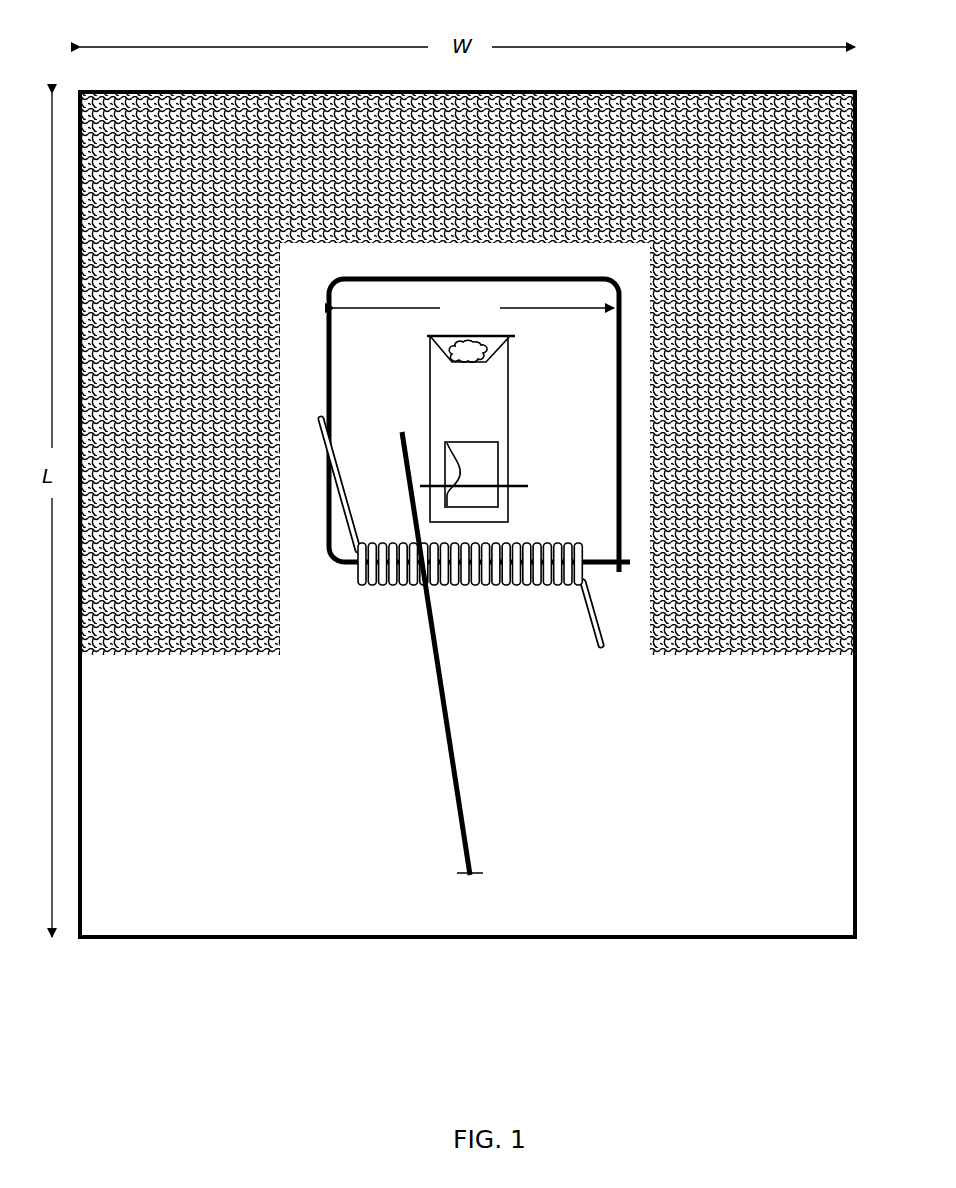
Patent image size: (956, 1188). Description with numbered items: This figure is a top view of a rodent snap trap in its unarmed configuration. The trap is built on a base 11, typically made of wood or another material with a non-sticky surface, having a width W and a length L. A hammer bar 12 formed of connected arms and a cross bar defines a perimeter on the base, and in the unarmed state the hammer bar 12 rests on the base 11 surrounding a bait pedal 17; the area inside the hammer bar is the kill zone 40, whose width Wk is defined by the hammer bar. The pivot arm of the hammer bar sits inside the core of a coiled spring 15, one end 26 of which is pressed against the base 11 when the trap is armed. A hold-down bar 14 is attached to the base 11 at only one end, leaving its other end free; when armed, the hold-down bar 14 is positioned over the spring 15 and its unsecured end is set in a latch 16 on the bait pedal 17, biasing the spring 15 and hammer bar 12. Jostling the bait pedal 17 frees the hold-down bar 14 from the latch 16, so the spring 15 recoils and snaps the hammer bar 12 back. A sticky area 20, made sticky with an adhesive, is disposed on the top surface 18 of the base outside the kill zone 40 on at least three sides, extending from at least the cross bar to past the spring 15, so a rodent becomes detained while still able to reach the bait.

The base 11 is at (720, 939).
The hammer bar 12 is at (355, 278).
The hold-down bar 14 is at (457, 777).
The coiled spring 15 is at (363, 589).
The latch 16 is at (440, 462).
The bait pedal 17 is at (508, 362).
The top surface 18 is at (803, 908).
The sticky area 20 is at (683, 656).
The end of the spring 26 is at (320, 428).
The kill zone 40 is at (352, 367).